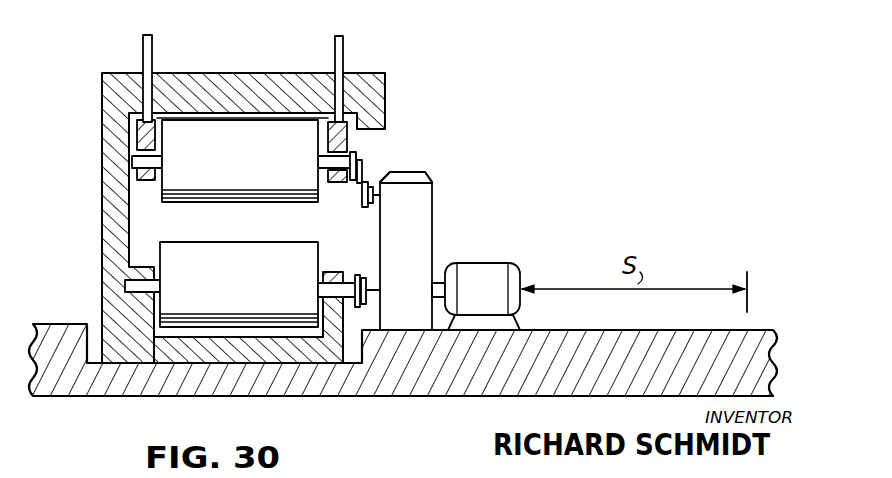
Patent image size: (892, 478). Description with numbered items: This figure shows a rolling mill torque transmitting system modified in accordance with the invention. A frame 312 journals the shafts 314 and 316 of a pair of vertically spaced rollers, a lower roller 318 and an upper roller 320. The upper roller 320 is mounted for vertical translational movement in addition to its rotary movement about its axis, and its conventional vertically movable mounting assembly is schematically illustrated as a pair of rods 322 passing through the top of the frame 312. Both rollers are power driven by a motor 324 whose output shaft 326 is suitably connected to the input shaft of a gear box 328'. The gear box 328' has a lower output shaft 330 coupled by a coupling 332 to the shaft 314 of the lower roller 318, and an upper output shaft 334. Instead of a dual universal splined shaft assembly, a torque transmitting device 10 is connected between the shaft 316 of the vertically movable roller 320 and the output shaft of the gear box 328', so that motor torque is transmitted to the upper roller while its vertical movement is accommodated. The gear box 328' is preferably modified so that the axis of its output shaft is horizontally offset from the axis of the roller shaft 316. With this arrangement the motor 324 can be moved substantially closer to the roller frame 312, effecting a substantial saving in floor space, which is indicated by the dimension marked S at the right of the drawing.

The torque transmitting device 10 is at (372, 162).
The frame 312 is at (102, 212).
The shaft 314 is at (330, 267).
The shaft 316 is at (353, 151).
The lower roller 318 is at (257, 250).
The upper roller 320 is at (275, 193).
The rods 322 is at (337, 52).
The motor 324 is at (496, 272).
The output shaft 326 is at (447, 283).
The gear box 328' is at (438, 251).
The lower output shaft 330 is at (373, 287).
The coupling 332 is at (365, 306).
The upper output shaft 334 is at (432, 183).